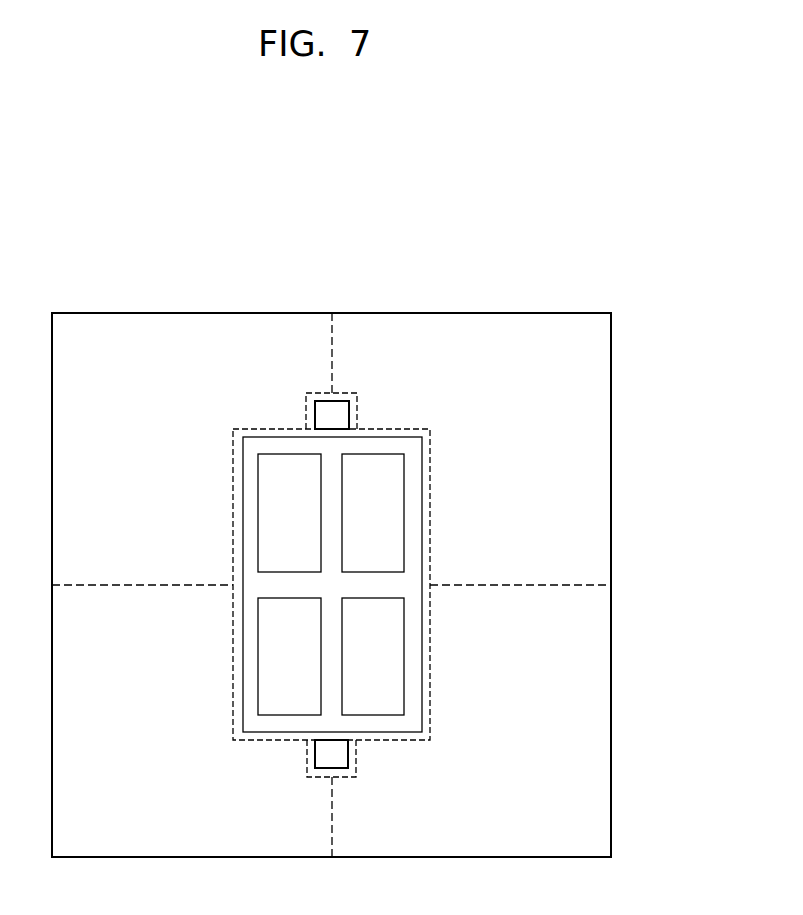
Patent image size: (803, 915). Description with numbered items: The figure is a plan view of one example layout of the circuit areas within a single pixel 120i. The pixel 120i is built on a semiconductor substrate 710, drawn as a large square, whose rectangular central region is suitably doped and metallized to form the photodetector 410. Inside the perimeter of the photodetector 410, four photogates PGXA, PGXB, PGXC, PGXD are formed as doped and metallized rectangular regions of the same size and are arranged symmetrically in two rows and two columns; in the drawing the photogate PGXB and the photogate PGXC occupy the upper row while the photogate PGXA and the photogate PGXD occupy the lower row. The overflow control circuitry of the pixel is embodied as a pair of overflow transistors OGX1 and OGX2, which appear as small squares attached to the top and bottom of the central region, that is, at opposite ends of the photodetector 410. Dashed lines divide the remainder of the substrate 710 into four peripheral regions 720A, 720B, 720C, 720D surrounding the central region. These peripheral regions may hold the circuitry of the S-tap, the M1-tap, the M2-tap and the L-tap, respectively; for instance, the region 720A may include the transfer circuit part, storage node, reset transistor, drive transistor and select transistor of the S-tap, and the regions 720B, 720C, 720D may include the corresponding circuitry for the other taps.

The pixel 120i is at (606, 271).
The semiconductor substrate 710 is at (611, 452).
The photodetector 410 is at (458, 585).
The peripheral region 720A is at (184, 742).
The peripheral region 720B is at (184, 453).
The peripheral region 720C is at (535, 453).
The peripheral region 720D is at (535, 742).
The photogate PGXA is at (313, 669).
The photogate PGXB is at (313, 524).
The photogate PGXC is at (397, 524).
The photogate PGXD is at (397, 669).
The overflow transistor OGX1 is at (343, 414).
The overflow transistor OGX2 is at (346, 755).